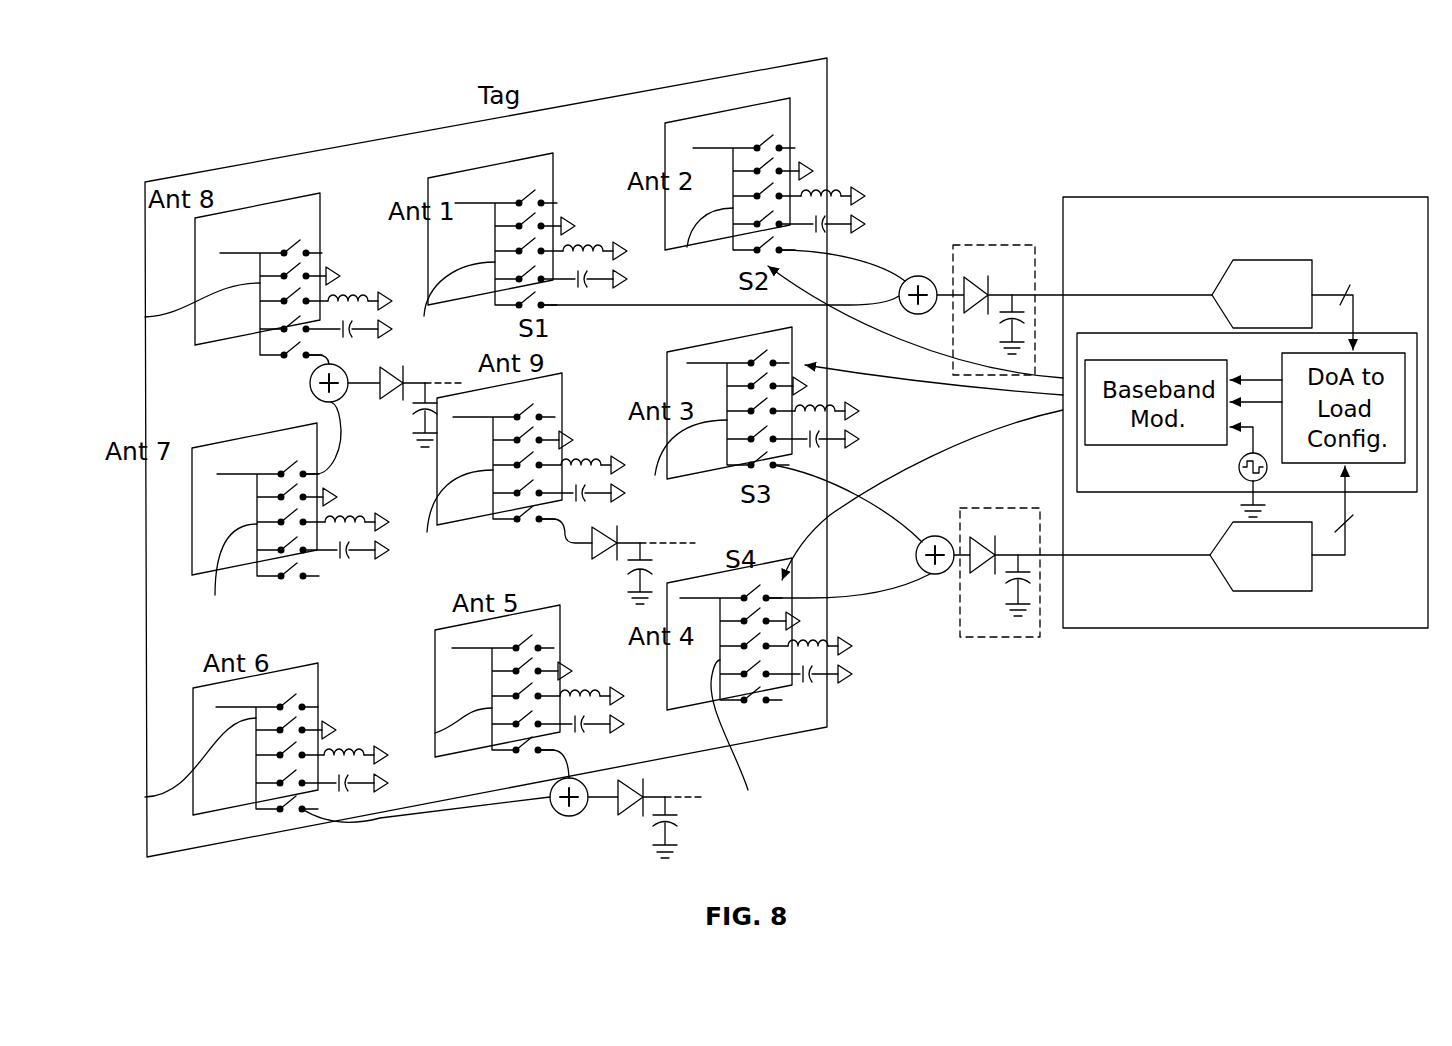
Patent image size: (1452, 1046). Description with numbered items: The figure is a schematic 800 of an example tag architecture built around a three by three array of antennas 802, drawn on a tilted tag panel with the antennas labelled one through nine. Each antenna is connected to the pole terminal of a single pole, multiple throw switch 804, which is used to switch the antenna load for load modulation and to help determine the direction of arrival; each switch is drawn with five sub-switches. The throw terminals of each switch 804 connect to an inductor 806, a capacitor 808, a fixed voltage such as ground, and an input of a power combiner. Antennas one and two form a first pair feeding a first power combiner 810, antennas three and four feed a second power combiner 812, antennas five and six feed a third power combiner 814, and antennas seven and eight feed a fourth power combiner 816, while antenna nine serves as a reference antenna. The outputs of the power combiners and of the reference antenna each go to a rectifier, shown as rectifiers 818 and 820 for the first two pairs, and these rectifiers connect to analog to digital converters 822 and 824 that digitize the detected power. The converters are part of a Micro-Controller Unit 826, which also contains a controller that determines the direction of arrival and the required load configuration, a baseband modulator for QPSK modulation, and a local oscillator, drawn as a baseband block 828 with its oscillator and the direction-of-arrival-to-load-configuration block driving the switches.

The schematic 800 is at (486, 431).
The antennas 802 is at (285, 197).
The single pole, multiple throw switch 804 is at (434, 517).
The inductor 806 is at (362, 297).
The capacitor 808 is at (350, 337).
The first power combiner 810 is at (918, 314).
The second power combiner 812 is at (918, 552).
The third power combiner 814 is at (548, 790).
The fourth power combiner 816 is at (310, 385).
The rectifier 818 is at (1010, 245).
The rectifier 820 is at (1010, 637).
The analog to digital converter 822 is at (1220, 280).
The analog to digital converter 824 is at (1215, 565).
The Micro-Controller Unit (MCU) 826 is at (1245, 412).
The baseband processing block 828 is at (1247, 412).